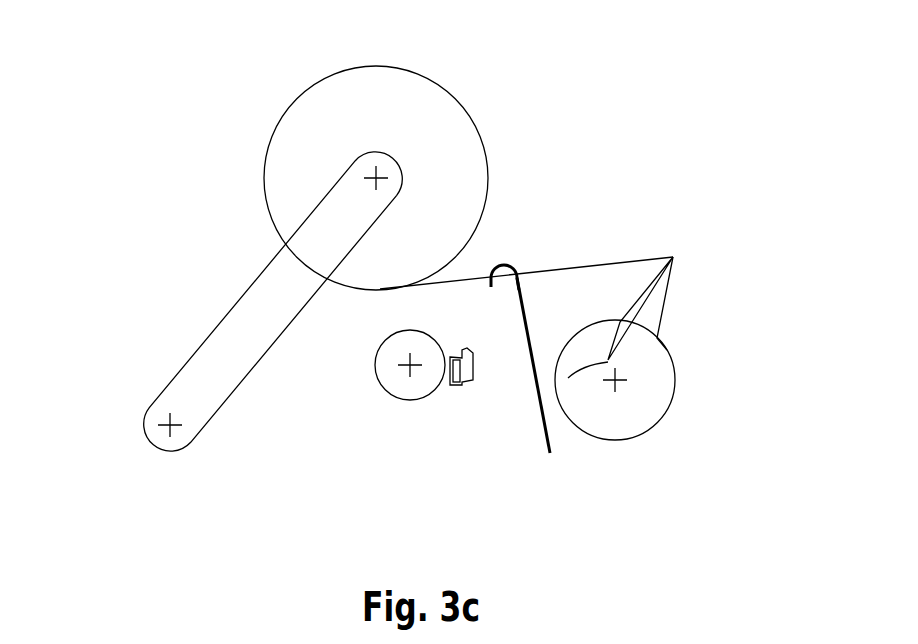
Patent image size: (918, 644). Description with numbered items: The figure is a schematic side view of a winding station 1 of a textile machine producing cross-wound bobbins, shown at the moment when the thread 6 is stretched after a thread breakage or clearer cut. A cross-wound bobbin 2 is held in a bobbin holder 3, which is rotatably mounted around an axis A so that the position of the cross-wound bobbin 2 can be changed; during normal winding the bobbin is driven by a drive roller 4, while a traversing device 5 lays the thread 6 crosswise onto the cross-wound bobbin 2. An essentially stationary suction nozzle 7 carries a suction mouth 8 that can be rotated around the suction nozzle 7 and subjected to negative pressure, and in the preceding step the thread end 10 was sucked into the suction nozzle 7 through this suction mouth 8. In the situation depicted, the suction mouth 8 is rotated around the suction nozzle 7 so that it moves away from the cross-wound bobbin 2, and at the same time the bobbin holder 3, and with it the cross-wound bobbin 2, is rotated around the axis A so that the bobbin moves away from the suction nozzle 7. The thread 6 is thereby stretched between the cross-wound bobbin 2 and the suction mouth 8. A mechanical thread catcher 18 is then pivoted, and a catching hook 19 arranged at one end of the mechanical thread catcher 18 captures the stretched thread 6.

The winding station 1 is at (103, 74).
The cross-wound bobbin 2 is at (350, 145).
The bobbin holder 3 is at (273, 301).
The axis A is at (118, 371).
The drive roller 4 is at (381, 405).
The traversing device 5 is at (457, 432).
The thread 6 is at (526, 198).
The suction nozzle 7 is at (667, 366).
The suction mouth 8 is at (674, 251).
The thread end 10 is at (683, 401).
The mechanical thread catcher 18 is at (604, 407).
The catching hook 19 is at (528, 197).